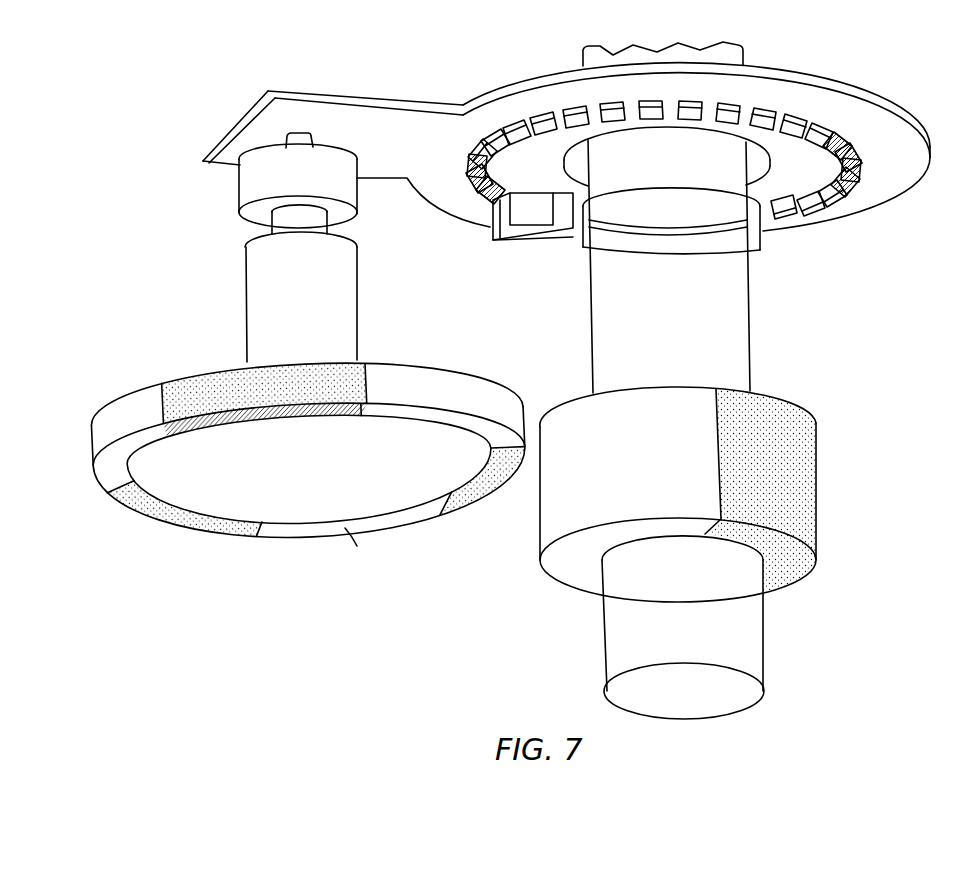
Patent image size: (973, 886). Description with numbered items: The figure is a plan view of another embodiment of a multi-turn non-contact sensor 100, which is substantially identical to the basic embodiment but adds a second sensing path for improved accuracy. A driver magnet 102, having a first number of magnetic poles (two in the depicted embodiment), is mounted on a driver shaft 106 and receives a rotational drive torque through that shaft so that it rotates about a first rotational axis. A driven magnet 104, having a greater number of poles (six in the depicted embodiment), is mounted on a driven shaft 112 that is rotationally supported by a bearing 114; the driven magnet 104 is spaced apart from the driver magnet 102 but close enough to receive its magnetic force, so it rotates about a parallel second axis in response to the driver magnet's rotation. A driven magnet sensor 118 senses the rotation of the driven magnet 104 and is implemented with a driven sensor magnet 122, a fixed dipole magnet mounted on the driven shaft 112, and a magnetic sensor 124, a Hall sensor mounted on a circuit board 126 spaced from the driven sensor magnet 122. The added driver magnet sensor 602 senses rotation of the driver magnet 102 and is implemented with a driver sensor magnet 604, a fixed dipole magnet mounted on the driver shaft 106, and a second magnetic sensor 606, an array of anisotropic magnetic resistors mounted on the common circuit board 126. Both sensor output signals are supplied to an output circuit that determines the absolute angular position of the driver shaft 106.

The multi-turn non-contact sensor 100 is at (122, 98).
The driver magnet 102 is at (818, 482).
The driven magnet 104 is at (142, 392).
The driver shaft 106 is at (752, 326).
The driven shaft 112 is at (333, 224).
The bearing 114 is at (247, 295).
The driven magnet sensor 118 is at (280, 159).
The driven sensor magnet 122 is at (238, 192).
The magnetic sensor 124 is at (322, 138).
The circuit board 126 is at (232, 130).
The driver magnet sensor 602 is at (709, 162).
The driver sensor magnet 604 is at (519, 217).
The second magnetic sensor 606 is at (686, 138).